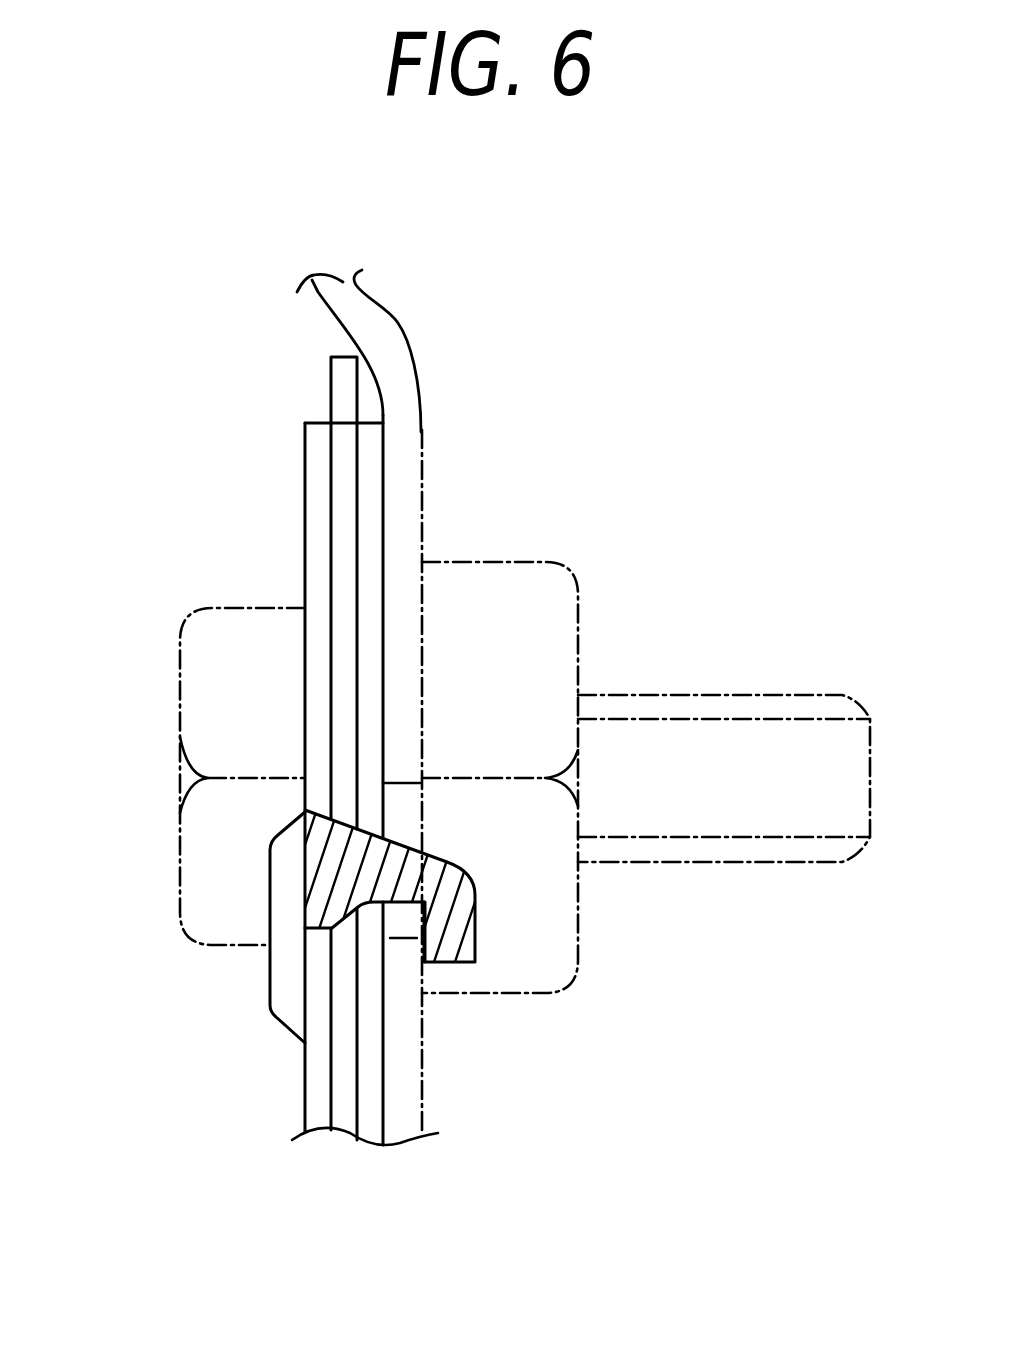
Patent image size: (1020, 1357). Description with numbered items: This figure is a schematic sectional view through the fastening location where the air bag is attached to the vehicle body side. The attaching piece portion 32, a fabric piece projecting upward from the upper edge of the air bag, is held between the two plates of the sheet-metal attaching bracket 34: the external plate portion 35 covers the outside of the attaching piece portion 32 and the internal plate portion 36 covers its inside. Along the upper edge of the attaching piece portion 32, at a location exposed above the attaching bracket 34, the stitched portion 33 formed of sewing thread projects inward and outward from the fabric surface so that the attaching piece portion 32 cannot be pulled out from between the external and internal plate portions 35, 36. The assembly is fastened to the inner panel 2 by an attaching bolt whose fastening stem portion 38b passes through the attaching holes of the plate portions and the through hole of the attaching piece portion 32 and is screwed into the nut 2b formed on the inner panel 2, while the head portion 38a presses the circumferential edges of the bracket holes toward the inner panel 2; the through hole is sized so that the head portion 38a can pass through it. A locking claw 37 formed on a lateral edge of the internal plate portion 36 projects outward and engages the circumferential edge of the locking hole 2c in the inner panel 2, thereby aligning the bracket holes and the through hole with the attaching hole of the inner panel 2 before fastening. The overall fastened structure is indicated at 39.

The inner panel 2 is at (390, 337).
The nut 2b is at (533, 603).
The locking hole 2c is at (403, 918).
The attaching piece portion 32 is at (345, 1118).
The stitched portion 33 is at (368, 387).
The attaching bracket 34 is at (540, 353).
The external plate portion 35 is at (370, 533).
The internal plate portion 36 is at (320, 497).
The locking claw 37 is at (503, 912).
The head portion 38a is at (190, 703).
The fastening stem portion 38b is at (773, 718).
The fastening structure 39 is at (170, 935).